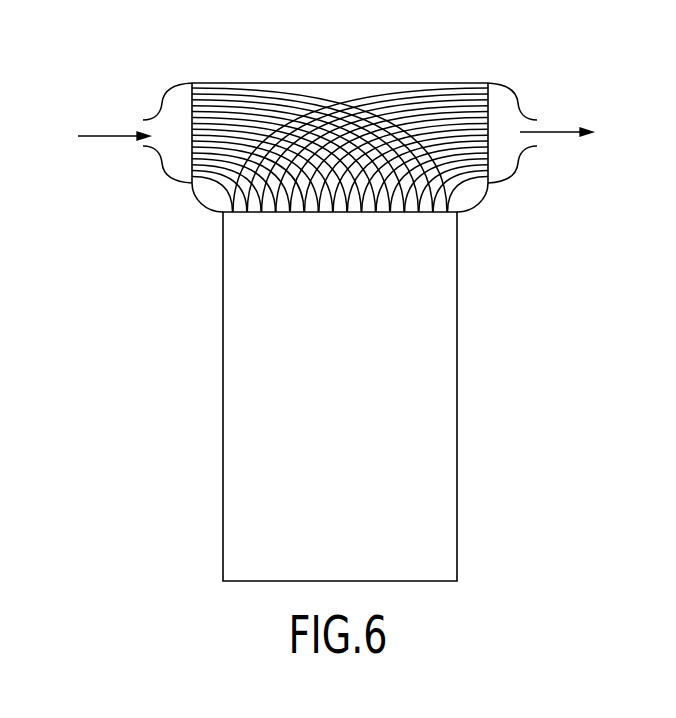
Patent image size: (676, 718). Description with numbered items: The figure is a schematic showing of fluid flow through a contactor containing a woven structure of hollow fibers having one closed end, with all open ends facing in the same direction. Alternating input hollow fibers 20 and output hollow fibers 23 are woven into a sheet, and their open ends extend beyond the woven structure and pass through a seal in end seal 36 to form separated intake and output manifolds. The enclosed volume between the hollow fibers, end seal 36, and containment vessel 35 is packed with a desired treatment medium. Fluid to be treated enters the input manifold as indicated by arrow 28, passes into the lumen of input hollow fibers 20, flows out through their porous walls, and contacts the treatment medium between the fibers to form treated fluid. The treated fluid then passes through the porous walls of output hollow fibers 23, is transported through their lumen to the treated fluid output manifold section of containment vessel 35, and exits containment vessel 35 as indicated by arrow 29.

The input hollow fibers 20 is at (308, 87).
The output hollow fibers 23 is at (372, 87).
The arrow 28 is at (94, 138).
The arrow 29 is at (556, 150).
The containment vessel 35 is at (222, 270).
The end seal 36 is at (458, 193).